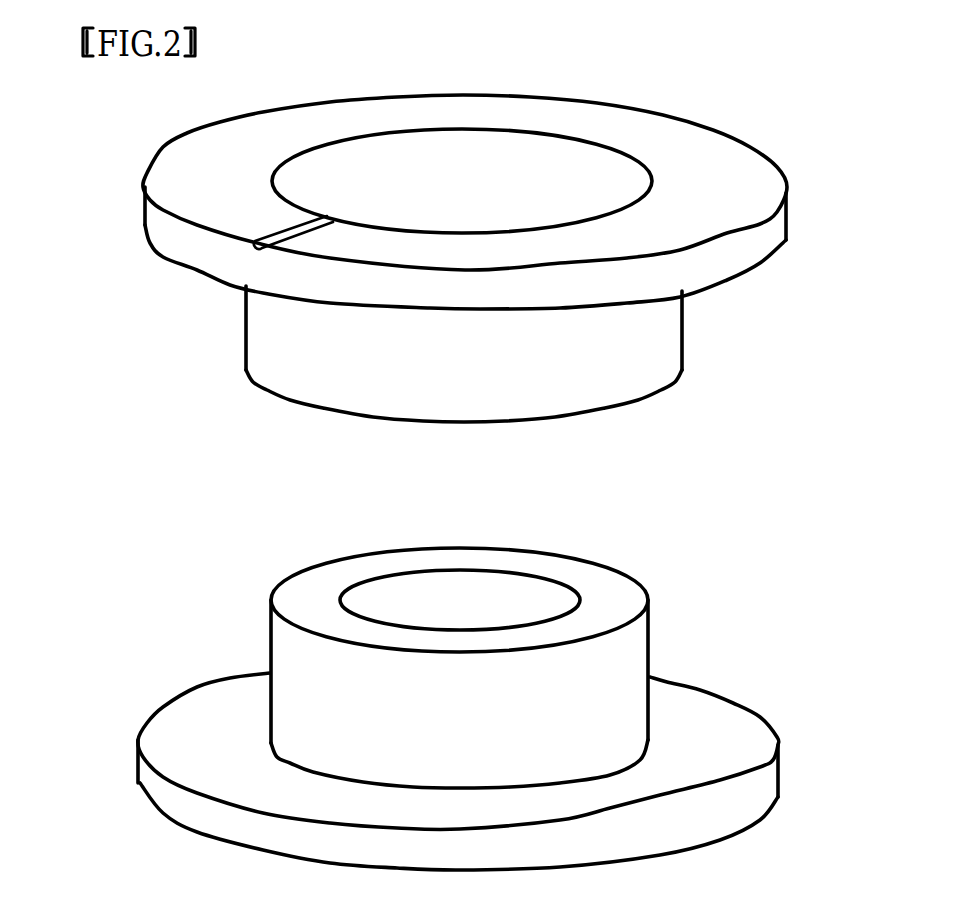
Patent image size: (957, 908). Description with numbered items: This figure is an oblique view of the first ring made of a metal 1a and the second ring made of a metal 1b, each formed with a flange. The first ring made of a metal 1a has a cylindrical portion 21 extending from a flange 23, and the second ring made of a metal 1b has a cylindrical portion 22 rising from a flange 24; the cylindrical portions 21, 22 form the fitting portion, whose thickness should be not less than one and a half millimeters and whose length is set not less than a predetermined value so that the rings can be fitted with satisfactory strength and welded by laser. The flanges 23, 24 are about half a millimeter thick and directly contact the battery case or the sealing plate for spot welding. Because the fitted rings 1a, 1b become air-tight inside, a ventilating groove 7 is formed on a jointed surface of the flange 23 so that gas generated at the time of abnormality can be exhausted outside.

The first ring made of a metal 1a is at (195, 341).
The second ring made of a metal 1b is at (706, 589).
The ventilating groove 7 is at (257, 240).
The cylindrical portion 21 is at (660, 348).
The cylindrical portion 22 is at (627, 660).
The flange 23 is at (738, 170).
The flange 24 is at (717, 765).